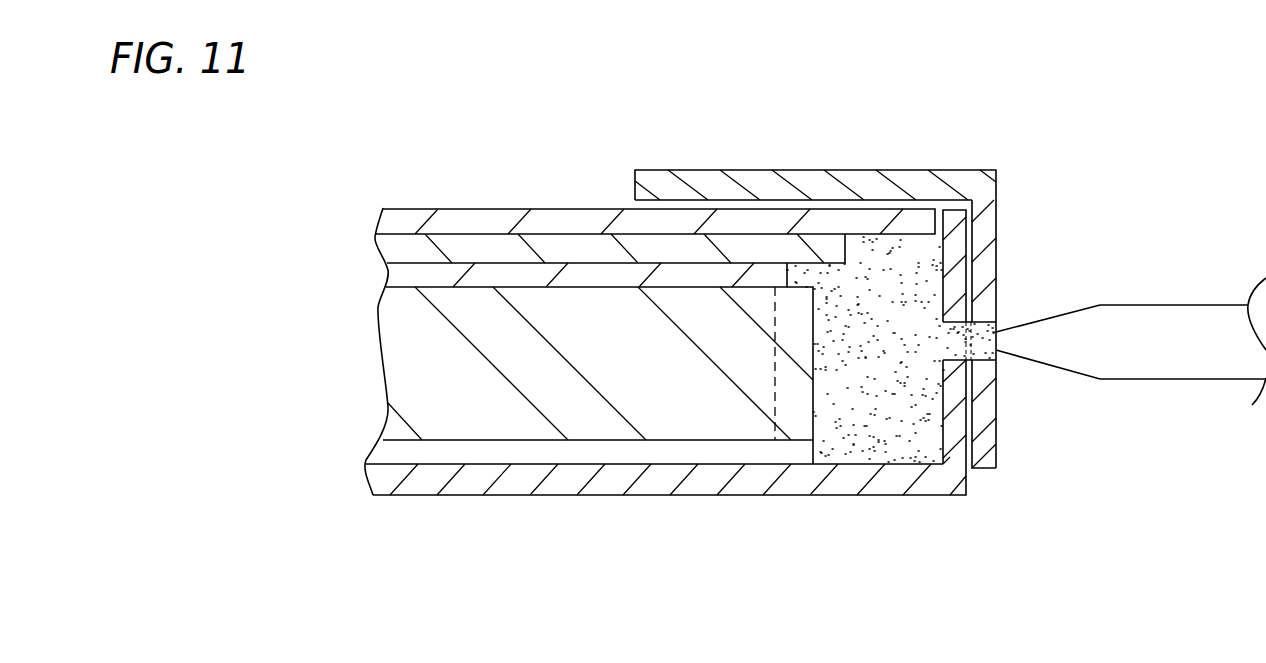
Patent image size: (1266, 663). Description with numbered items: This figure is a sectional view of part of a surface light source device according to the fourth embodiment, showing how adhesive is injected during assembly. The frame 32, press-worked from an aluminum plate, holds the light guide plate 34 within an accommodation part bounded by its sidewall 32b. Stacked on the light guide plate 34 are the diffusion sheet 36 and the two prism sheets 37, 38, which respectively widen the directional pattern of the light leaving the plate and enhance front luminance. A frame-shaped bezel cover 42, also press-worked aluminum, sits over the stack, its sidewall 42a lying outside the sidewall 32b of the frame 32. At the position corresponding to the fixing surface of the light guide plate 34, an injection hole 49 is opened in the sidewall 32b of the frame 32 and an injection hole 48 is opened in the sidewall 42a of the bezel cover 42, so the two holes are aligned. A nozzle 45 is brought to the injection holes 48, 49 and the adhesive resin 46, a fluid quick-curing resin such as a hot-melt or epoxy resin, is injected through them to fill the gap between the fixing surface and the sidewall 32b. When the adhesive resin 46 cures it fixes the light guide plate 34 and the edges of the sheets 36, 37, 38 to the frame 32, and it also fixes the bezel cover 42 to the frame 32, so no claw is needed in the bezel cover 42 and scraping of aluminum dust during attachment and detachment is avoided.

The frame 32 is at (655, 478).
The sidewall 32b is at (960, 235).
The light guide plate 34 is at (453, 357).
The diffusion sheet 36 is at (578, 277).
The prism sheet 37 is at (498, 250).
The prism sheet 38 is at (410, 222).
The bezel cover 42 is at (763, 178).
The sidewall 42a is at (987, 438).
The nozzle 45 is at (1163, 332).
The adhesive resin 46 is at (883, 423).
The injection hole 48 is at (983, 322).
The injection hole 49 is at (953, 362).